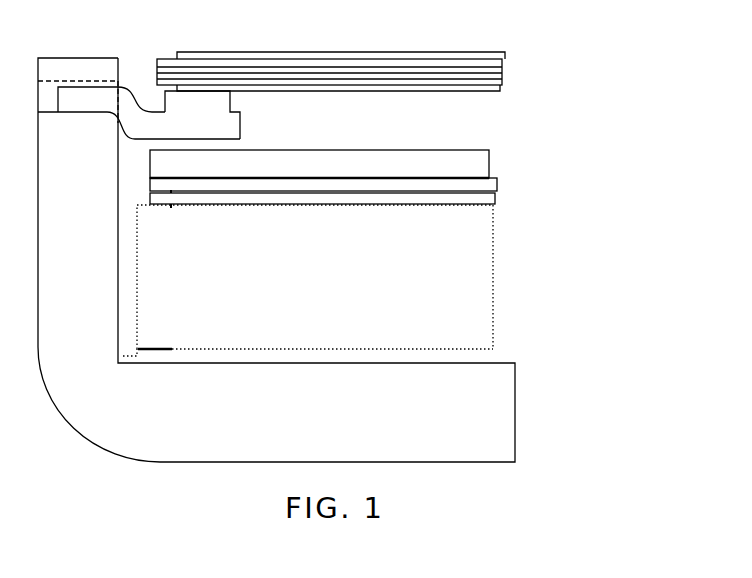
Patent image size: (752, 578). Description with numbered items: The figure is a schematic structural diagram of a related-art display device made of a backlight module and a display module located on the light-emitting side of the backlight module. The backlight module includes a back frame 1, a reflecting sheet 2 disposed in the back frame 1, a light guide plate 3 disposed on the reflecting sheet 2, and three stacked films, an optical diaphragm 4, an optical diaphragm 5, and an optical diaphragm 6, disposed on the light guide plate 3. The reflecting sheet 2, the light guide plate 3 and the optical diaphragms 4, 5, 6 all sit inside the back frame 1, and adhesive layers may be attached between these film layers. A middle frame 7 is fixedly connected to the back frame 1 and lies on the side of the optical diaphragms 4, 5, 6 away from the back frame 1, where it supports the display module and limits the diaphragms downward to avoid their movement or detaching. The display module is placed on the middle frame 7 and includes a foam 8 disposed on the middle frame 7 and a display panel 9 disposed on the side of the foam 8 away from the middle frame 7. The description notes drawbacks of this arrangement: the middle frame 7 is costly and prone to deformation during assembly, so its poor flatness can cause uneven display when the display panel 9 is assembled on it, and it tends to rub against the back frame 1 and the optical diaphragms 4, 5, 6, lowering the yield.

The back frame 1 is at (443, 423).
The reflecting sheet 2 is at (443, 357).
The light guide plate 3 is at (432, 293).
The optical diaphragm 4 is at (450, 200).
The optical diaphragm 5 is at (443, 183).
The optical diaphragm 6 is at (450, 163).
The middle frame 7 is at (222, 125).
The foam 8 is at (177, 103).
The display panel 9 is at (505, 72).